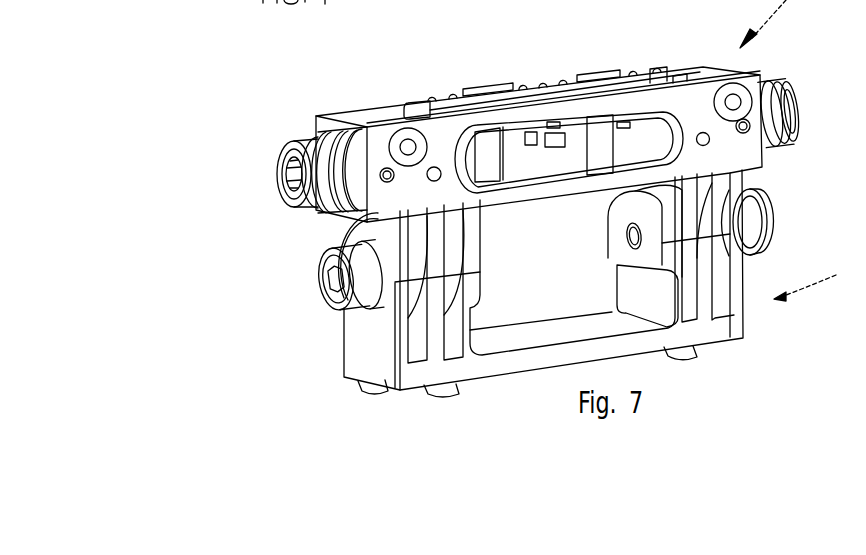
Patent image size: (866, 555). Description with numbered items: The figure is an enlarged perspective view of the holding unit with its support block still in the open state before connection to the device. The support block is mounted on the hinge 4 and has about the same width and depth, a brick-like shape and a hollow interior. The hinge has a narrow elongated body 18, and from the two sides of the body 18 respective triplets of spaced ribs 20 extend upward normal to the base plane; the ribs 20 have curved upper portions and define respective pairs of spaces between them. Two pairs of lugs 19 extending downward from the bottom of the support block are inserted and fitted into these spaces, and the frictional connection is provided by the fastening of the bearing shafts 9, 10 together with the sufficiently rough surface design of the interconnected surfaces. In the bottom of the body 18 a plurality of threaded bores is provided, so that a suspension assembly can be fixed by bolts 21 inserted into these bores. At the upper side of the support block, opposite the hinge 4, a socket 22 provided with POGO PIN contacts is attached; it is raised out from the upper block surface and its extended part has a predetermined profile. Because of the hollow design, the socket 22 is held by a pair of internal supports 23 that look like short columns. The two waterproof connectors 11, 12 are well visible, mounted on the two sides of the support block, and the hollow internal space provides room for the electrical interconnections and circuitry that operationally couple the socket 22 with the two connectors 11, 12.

The hinge 4 is at (813, 278).
The bearing shaft 9 is at (365, 292).
The bearing shaft 10 is at (753, 207).
The waterproof connector 11 is at (288, 152).
The waterproof connector 12 is at (782, 95).
The body 18 is at (510, 323).
The lug 19 is at (447, 242).
The rib 20 is at (708, 297).
The bolt 21 is at (458, 390).
The socket 22 is at (415, 101).
The internal support 23 is at (604, 160).